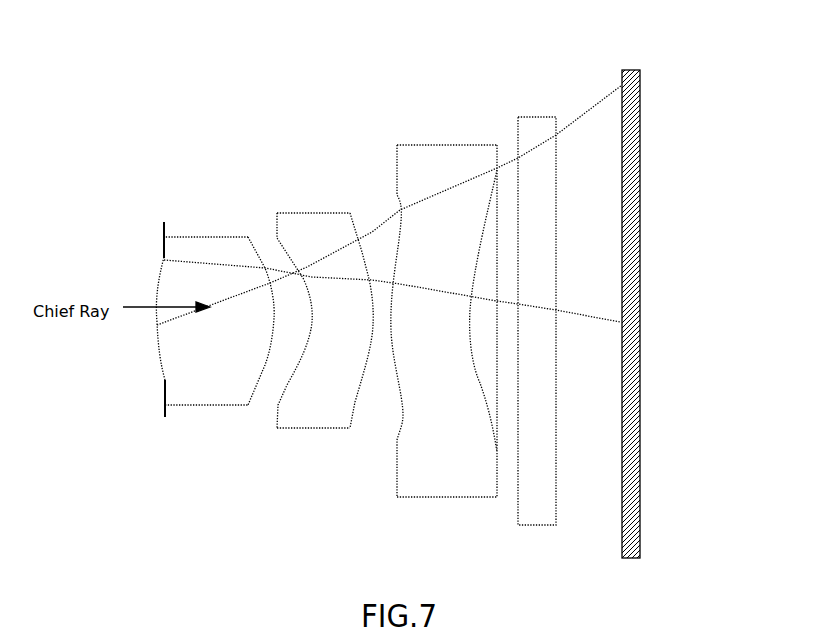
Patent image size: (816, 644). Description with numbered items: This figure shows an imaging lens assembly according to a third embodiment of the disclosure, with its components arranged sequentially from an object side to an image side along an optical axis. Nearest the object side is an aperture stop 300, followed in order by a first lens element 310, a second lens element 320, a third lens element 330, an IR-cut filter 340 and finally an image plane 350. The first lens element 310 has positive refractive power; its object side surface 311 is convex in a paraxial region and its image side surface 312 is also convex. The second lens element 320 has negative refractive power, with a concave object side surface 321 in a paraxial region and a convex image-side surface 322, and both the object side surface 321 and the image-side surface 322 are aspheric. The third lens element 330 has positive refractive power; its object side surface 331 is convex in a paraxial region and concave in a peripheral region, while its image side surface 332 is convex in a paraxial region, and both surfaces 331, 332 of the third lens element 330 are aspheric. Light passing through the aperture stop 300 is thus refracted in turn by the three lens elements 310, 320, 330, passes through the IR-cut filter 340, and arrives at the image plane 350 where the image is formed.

The aperture stop 300 is at (164, 214).
The first lens element 310 is at (192, 310).
The object side surface 311 is at (152, 367).
The image side surface 312 is at (255, 367).
The second lens element 320 is at (308, 301).
The object side surface 321 is at (285, 372).
The image-side surface 322 is at (355, 365).
The third lens element 330 is at (422, 302).
The object side surface 331 is at (388, 413).
The image side surface 332 is at (480, 430).
The IR-cut filter 340 is at (534, 109).
The image plane 350 is at (649, 64).